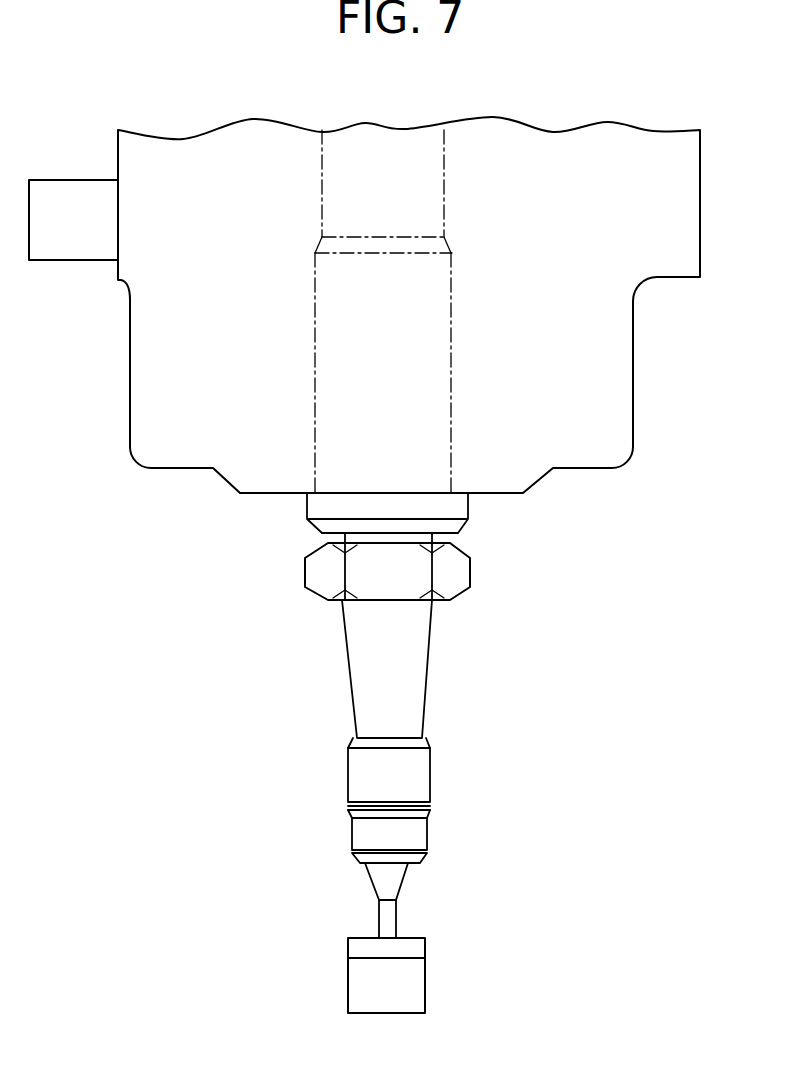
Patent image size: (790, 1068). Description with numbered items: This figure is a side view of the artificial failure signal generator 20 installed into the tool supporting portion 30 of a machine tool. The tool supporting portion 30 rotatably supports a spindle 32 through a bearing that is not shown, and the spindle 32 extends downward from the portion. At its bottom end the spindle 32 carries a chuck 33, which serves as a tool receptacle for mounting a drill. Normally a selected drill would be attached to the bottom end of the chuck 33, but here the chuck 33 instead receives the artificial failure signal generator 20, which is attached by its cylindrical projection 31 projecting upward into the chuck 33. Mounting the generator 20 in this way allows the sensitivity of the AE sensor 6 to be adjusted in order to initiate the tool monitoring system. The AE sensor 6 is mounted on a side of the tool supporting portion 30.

The tool supporting portion 30 is at (700, 228).
The AE sensor 6 is at (61, 248).
The spindle 32 is at (433, 465).
The chuck 33 is at (415, 777).
The cylindrical projection 31 is at (380, 915).
The artificial failure signal generator 20 is at (417, 980).